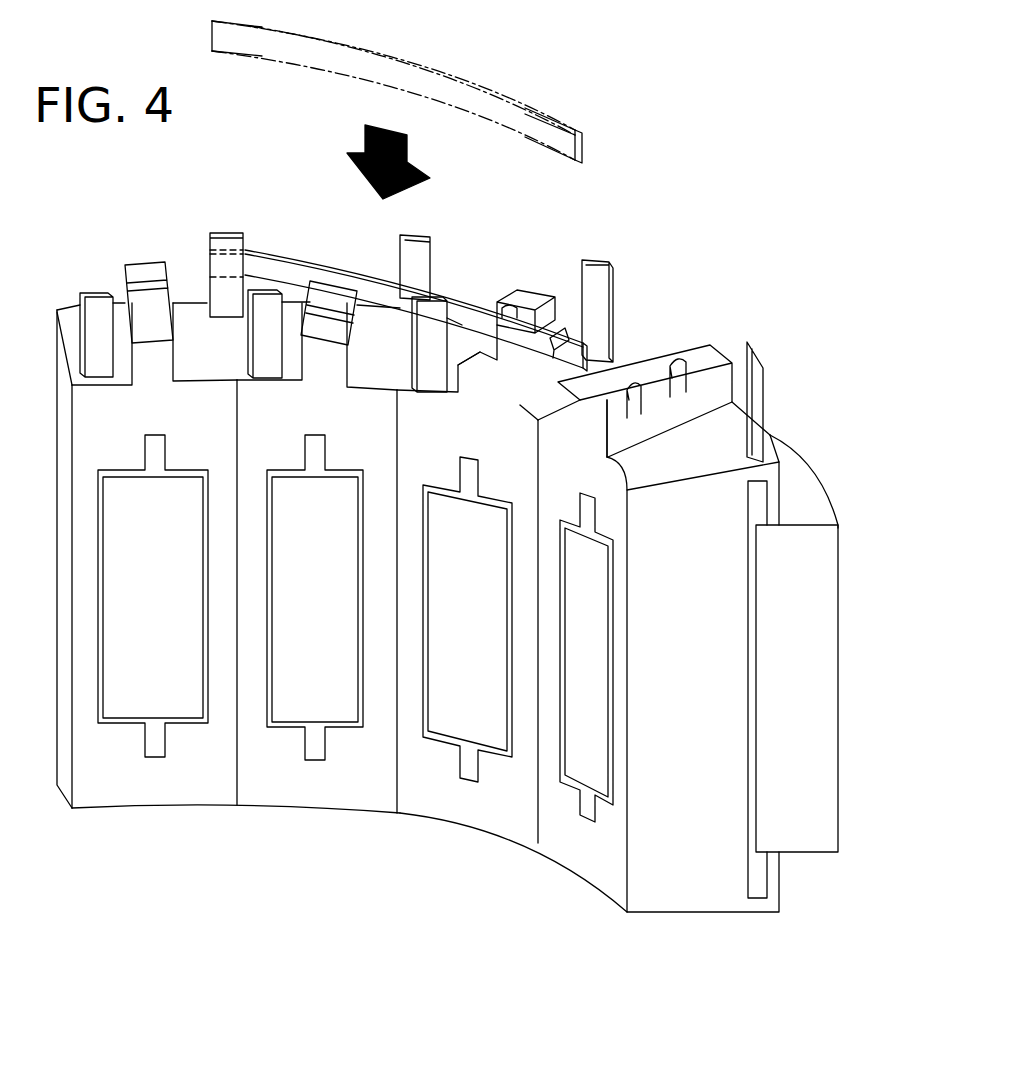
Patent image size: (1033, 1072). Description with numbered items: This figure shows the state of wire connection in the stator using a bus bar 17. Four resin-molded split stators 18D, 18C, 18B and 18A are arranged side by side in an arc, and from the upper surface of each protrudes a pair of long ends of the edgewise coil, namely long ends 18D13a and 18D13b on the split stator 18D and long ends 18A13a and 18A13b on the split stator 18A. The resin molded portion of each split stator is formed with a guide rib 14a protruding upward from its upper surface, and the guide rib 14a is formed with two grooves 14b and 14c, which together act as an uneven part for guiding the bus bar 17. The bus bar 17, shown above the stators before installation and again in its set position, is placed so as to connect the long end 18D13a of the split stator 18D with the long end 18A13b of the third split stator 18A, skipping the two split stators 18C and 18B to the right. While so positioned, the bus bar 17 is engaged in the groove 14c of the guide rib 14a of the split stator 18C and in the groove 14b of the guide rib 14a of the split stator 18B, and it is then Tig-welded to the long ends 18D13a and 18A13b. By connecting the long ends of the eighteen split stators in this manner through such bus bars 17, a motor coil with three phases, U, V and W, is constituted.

The bus bar 17 is at (528, 105).
The third split stator 18A is at (570, 845).
The split stator 18B is at (433, 815).
The split stator 18C is at (305, 797).
The split stator 18D is at (152, 797).
The long end of split stator 18A 18A13a is at (755, 360).
The long end of split stator 18A 18A13b is at (565, 336).
The long end of split stator 18D 18D13a is at (225, 233).
The long end of split stator 18D 18D13b is at (92, 296).
The guide rib 14a is at (520, 297).
The groove 14b is at (480, 365).
The groove 14c is at (510, 310).